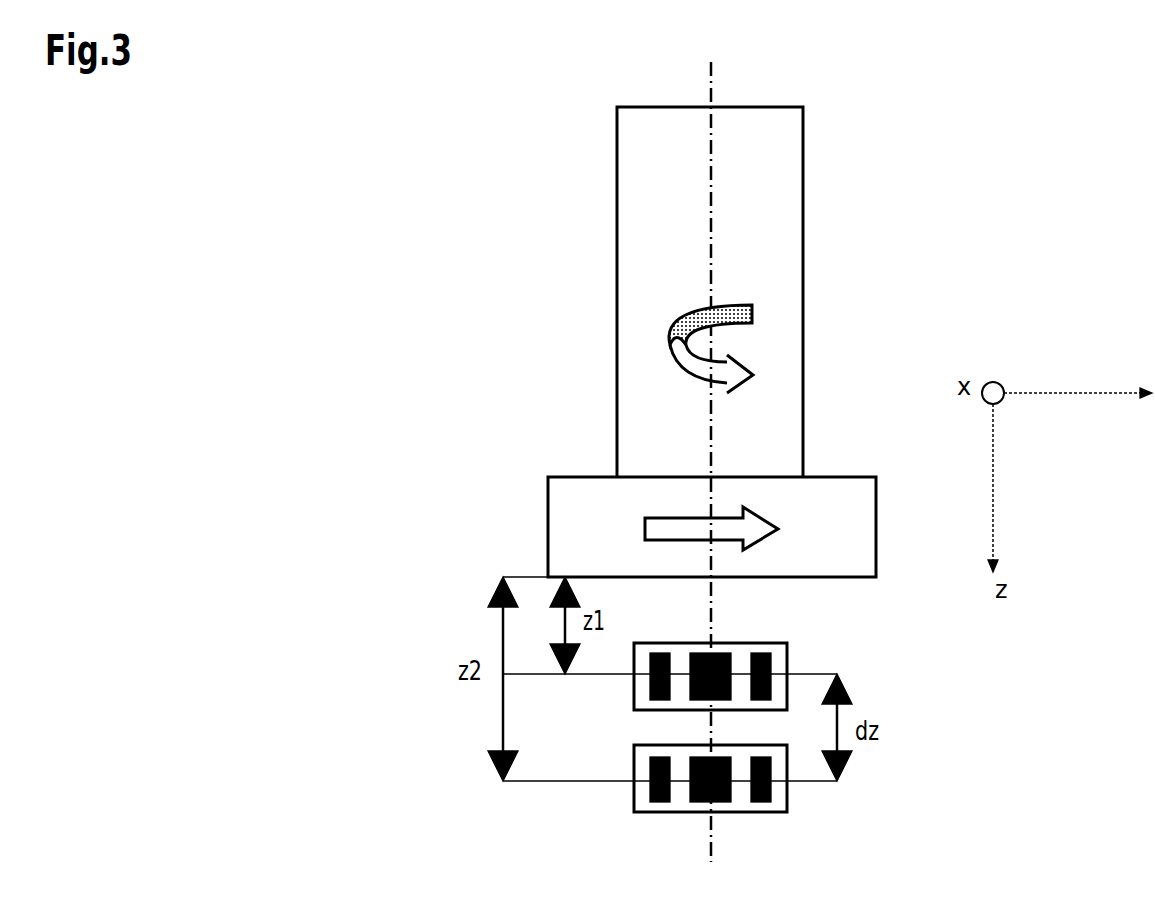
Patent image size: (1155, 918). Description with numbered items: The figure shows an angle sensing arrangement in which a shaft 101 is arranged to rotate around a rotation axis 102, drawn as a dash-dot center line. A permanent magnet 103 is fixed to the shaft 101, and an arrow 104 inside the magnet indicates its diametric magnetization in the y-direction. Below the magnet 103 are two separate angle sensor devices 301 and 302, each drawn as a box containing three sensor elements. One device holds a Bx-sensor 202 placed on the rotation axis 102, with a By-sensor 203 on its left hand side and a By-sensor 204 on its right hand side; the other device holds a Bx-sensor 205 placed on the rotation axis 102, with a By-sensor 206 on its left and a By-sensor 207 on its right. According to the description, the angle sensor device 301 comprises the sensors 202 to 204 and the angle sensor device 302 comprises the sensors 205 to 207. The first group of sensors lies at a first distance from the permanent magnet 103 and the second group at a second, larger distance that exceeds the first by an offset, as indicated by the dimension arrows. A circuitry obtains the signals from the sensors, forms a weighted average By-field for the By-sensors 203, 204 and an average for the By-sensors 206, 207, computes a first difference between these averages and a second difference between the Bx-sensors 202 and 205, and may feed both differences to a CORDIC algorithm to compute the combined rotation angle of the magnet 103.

The shaft 101 is at (617, 247).
The rotation axis 102 is at (711, 92).
The permanent magnet 103 is at (547, 518).
The arrow 104 is at (655, 527).
The Bx-sensor 202 is at (697, 653).
The By-sensor 203 is at (652, 685).
The By-sensor 204 is at (763, 653).
The Bx-sensor 205 is at (698, 803).
The By-sensor 206 is at (652, 787).
The By-sensor 207 is at (770, 797).
The angle sensor device 301 is at (713, 814).
The angle sensor device 302 is at (728, 655).